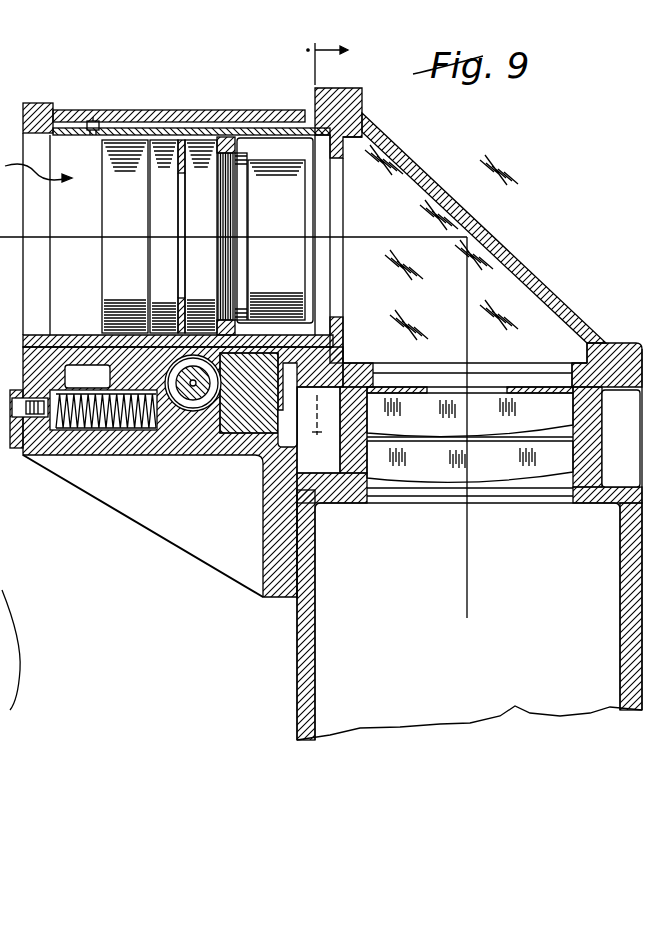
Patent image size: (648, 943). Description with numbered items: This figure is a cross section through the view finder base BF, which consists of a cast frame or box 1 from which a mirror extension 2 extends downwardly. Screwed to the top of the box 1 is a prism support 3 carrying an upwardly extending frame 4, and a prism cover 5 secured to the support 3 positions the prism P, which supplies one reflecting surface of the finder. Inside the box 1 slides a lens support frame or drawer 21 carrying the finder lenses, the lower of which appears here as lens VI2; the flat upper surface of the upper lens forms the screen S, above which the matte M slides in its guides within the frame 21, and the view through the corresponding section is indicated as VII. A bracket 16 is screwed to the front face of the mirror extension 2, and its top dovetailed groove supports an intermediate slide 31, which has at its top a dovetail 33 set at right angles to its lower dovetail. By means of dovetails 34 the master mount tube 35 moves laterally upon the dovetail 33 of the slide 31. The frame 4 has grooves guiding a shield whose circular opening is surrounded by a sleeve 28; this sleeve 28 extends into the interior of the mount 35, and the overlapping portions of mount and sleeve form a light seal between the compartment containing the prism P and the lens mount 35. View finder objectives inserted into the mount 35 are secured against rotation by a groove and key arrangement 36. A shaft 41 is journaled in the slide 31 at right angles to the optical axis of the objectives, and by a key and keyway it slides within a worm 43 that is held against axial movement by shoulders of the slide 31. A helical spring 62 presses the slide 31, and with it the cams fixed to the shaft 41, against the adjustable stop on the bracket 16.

The cast frame or box 1 is at (618, 398).
The mirror extension 2 is at (306, 609).
The prism support 3 is at (618, 363).
The frame 4 is at (332, 90).
The prism cover 5 is at (403, 150).
The bracket 16 is at (185, 523).
The lens support frame or drawer 21 is at (582, 447).
The sleeve 28 is at (312, 126).
The intermediate slide 31 is at (170, 425).
The dovetail 33 is at (250, 352).
The dovetails 34 is at (282, 352).
The master mount tube 35 is at (62, 380).
The groove and key arrangement 36 is at (80, 121).
The shaft 41 is at (118, 384).
The worm 43 is at (212, 398).
The helical spring 62 is at (100, 427).
The prism P is at (441, 242).
The matte M is at (530, 393).
The screen S is at (498, 397).
The chamber VII is at (366, 438).
The lower lens VI2 is at (448, 474).
The view finder base BF is at (292, 655).